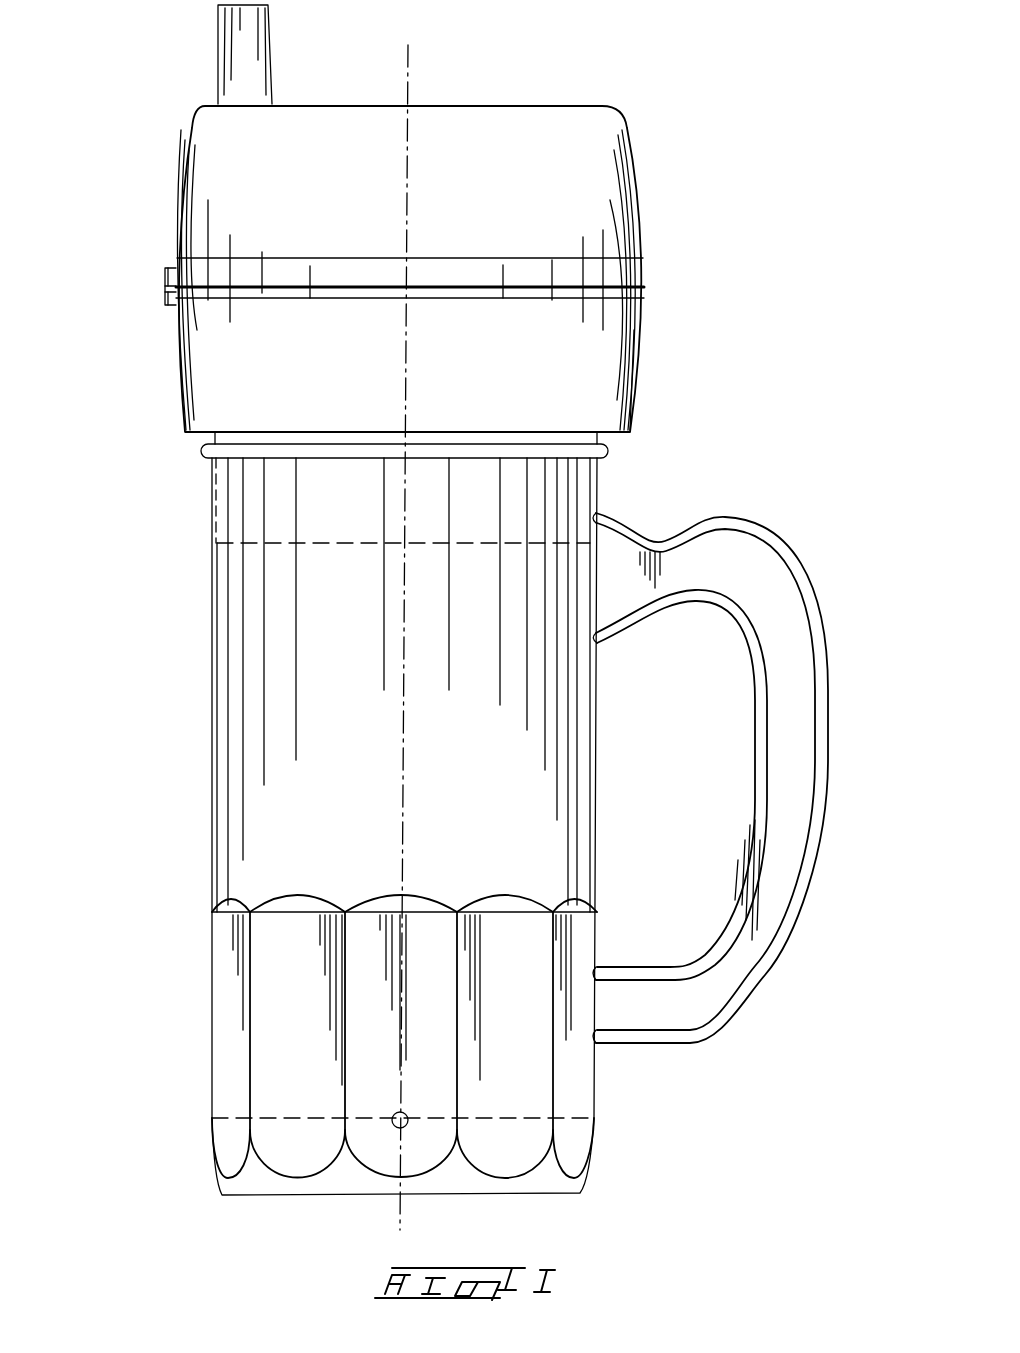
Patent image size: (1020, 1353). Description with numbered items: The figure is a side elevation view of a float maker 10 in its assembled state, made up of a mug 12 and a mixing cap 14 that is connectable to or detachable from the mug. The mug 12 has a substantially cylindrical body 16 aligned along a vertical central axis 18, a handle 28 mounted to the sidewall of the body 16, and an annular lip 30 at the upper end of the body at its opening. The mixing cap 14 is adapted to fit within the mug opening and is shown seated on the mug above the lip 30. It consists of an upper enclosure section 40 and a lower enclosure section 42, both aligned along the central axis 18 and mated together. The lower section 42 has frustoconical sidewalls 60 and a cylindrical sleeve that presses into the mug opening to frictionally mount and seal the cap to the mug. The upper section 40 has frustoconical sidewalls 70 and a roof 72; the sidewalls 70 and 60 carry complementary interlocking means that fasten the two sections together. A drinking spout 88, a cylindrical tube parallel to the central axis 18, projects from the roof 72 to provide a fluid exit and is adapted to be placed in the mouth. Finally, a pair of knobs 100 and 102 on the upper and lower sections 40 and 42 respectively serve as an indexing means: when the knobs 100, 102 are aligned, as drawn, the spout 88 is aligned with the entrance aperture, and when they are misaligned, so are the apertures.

The float maker 10 is at (722, 347).
The mug 12 is at (351, 826).
The mixing cap 14 is at (140, 268).
The cylindrical body 16 is at (207, 695).
The vertical central axis 18 is at (410, 65).
The handle 28 is at (830, 663).
The annular lip 30 is at (612, 455).
The upper enclosure section 40 is at (397, 252).
The lower enclosure section 42 is at (180, 385).
The frustoconical sidewalls 60 is at (640, 372).
The frustoconical sidewalls 70 is at (623, 151).
The roof 72 is at (520, 105).
The drinking spout 88 is at (272, 55).
The knob 100 is at (165, 268).
The knob 102 is at (160, 302).